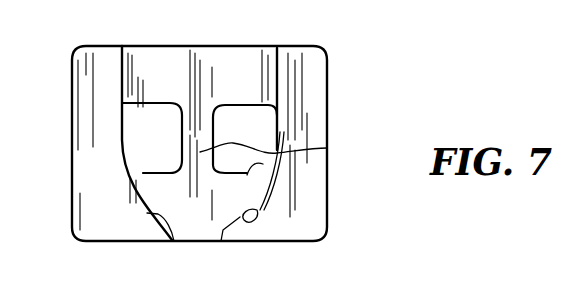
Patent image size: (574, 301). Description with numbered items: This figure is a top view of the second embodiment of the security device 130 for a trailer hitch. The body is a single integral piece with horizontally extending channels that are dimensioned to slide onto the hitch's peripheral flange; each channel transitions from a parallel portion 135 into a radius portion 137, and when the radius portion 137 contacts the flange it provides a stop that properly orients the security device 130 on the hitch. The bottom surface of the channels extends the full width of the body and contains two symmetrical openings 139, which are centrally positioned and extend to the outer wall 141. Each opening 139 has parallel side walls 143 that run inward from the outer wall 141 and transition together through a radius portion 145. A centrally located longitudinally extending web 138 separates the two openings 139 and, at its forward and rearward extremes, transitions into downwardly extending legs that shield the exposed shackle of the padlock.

The security device 130 is at (343, 71).
The parallel portion 135 is at (127, 73).
The radius portion 137 is at (172, 240).
The longitudinally extending web 138 is at (327, 148).
The openings 139 is at (153, 113).
The outer wall 141 is at (73, 75).
The parallel side walls 143 is at (123, 113).
The radius portion 145 is at (182, 133).